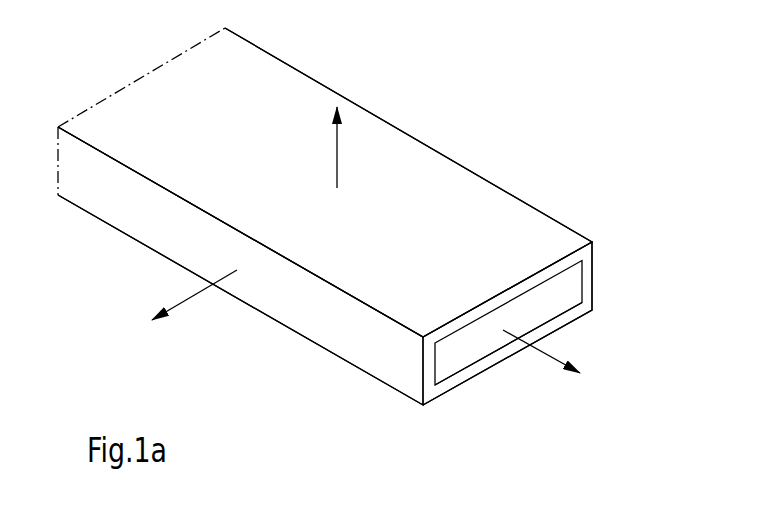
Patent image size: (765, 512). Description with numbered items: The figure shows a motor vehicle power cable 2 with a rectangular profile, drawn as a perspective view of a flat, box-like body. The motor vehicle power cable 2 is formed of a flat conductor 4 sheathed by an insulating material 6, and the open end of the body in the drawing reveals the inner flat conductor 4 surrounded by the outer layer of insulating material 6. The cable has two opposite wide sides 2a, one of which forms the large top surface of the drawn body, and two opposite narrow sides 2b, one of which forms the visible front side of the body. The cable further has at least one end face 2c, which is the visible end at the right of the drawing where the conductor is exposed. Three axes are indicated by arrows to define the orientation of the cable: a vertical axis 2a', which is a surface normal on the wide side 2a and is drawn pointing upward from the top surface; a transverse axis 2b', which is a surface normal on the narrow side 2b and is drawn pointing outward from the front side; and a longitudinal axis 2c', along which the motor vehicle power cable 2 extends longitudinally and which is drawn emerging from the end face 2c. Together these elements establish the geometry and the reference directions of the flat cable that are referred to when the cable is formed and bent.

The motor vehicle power cable 2 is at (553, 85).
The wide side 2a is at (325, 179).
The vertical axis 2a' is at (369, 147).
The narrow side 2b is at (240, 266).
The transverse axis 2b' is at (194, 309).
The end face 2c is at (533, 312).
The longitudinal axis 2c' is at (541, 370).
The flat conductor 4 is at (548, 300).
The insulating material 6 is at (430, 390).